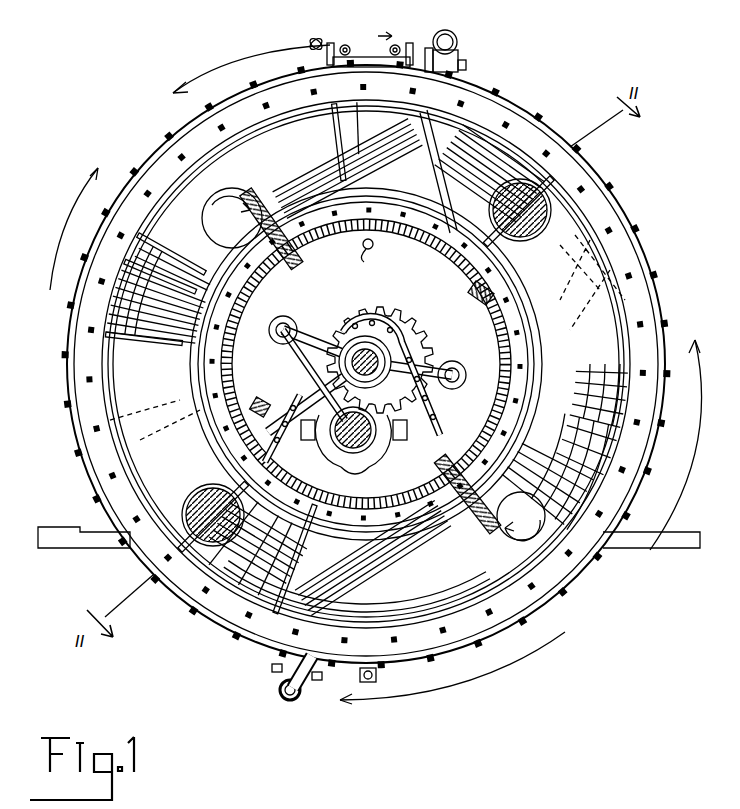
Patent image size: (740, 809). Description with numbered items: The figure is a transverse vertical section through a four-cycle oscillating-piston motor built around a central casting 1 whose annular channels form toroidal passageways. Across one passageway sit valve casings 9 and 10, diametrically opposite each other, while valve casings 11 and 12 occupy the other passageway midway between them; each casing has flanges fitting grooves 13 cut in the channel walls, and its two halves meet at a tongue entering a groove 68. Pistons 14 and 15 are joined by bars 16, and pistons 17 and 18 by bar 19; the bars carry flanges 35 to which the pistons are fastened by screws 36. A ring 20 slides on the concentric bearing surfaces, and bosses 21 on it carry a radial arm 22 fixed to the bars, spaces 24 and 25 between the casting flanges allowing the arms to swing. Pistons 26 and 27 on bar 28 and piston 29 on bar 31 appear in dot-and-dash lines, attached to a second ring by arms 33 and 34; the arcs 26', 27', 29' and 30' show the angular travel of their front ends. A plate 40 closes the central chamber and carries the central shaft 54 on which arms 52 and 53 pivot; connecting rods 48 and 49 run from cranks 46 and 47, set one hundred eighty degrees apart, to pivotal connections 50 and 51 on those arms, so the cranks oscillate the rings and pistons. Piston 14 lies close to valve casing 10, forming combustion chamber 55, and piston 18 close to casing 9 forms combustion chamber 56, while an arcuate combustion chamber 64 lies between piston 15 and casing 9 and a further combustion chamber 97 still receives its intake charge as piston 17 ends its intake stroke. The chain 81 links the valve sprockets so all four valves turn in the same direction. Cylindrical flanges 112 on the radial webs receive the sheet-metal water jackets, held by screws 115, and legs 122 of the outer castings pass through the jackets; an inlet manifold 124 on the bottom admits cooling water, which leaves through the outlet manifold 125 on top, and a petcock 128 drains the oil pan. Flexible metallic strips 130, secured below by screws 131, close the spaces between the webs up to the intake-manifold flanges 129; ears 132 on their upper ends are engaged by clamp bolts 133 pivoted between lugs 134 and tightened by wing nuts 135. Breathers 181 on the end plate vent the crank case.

The central casting 1 is at (248, 374).
The valve casing 9 is at (178, 495).
The valve casing 10 is at (530, 238).
The valve casing 11 is at (235, 200).
The valve casing 12 is at (485, 568).
The grooves 13 is at (560, 178).
The piston 14 is at (470, 150).
The piston 15 is at (100, 285).
The bars 16 is at (268, 195).
The piston 17 is at (618, 440).
The piston 18 is at (258, 598).
The bar 19 is at (395, 560).
The ring 20 is at (458, 254).
The bosses 21 is at (300, 250).
The radial arm 22 is at (296, 270).
The space 24 is at (250, 300).
The space 25 is at (440, 412).
The piston 26 is at (467, 546).
The piston 27 is at (155, 271).
The bar 28 is at (178, 445).
The piston 29 is at (348, 160).
The bar 31 is at (594, 331).
The arm 33 is at (258, 418).
The arm 34 is at (470, 312).
The flanges 35 is at (175, 288).
The screws 36 is at (412, 88).
The end plate 40 is at (457, 215).
The crank 46 is at (335, 455).
The crank 47 is at (338, 474).
The connecting rod 48 is at (305, 378).
The connecting rod 49 is at (436, 396).
The pivotal connection 50 is at (288, 326).
The pivotal connection 51 is at (458, 366).
The arm 52 is at (271, 375).
The arm 53 is at (438, 362).
The central shaft 54 is at (400, 335).
The combustion chamber 55 is at (530, 150).
The combustion chamber 56 is at (180, 595).
The arcuate combustion chamber 64 is at (100, 450).
The groove 68 is at (177, 572).
The chain 81 is at (370, 345).
The combustion chamber 97 is at (630, 254).
The cylindrical flanges 112 is at (160, 152).
The screws 115 is at (572, 570).
The legs 122 is at (104, 548).
The bottom bracket 124 is at (280, 689).
The outlet manifold 125 is at (460, 52).
The petcock 128 is at (378, 676).
The intake manifold flanges 129 is at (380, 36).
The flexible metallic strips 130 is at (662, 290).
The screws 131 is at (636, 455).
The ears 132 is at (312, 56).
The clamp bolts 133 is at (370, 53).
The lugs 134 is at (405, 44).
The wing nuts 135 is at (440, 36).
The breathers 181 is at (375, 257).
The arc 26' is at (452, 676).
The arc 27' is at (53, 229).
The arc 29' is at (282, 55).
The arc 30' is at (680, 445).